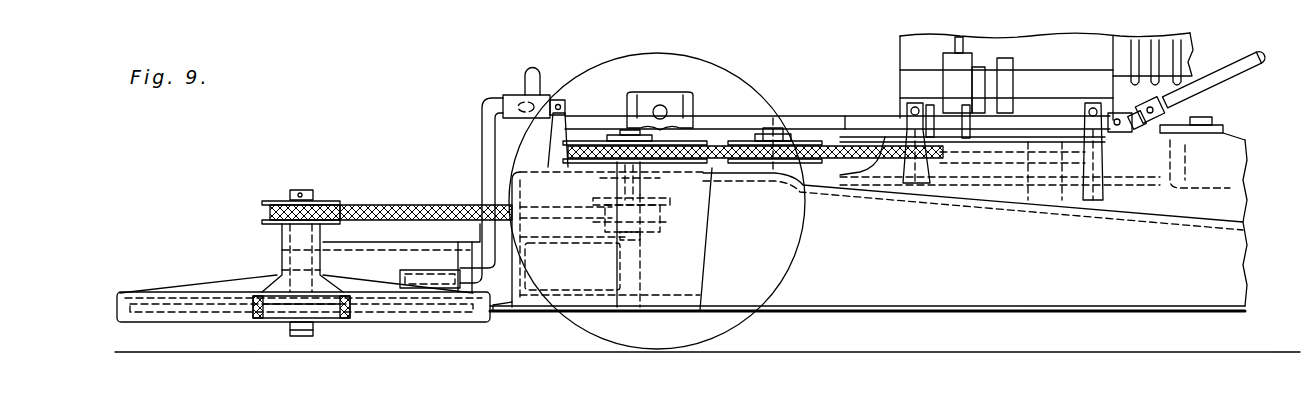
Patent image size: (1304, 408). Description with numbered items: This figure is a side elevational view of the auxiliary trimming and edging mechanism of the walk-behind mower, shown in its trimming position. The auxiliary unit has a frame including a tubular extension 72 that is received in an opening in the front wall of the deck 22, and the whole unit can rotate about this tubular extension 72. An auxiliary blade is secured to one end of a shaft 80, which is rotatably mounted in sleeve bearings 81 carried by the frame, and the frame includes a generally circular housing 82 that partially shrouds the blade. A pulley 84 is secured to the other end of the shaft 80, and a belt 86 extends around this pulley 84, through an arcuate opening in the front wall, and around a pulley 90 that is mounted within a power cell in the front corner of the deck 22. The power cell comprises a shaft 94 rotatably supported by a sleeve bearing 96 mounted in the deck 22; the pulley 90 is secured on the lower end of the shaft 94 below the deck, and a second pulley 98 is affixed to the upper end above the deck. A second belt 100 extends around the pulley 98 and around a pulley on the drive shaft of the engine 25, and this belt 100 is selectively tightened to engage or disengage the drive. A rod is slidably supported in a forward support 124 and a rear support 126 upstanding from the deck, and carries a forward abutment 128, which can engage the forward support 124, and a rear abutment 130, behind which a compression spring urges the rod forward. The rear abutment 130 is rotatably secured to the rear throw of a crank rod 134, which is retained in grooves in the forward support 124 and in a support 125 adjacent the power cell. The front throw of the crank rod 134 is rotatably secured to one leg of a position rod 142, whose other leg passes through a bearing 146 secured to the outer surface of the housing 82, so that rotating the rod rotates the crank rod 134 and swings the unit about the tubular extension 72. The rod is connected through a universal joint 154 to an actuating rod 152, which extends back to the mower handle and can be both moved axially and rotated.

The deck 22 is at (1035, 295).
The engine 25 is at (900, 44).
The tubular extension 72 is at (572, 312).
The shaft 80 is at (300, 190).
The sleeve bearings 81 is at (282, 240).
The circular housing 82 is at (185, 292).
The pulley 84 is at (330, 202).
The belt 86 is at (420, 210).
The pulley 90 is at (670, 205).
The shaft 94 is at (620, 140).
The sleeve bearing 96 is at (655, 178).
The second pulley 98 is at (692, 130).
The second belt 100 is at (845, 130).
The forward support 124 is at (915, 186).
The support 125 is at (556, 102).
The rear support 126 is at (1095, 195).
The forward abutment 128 is at (930, 105).
The rear abutment 130 is at (965, 110).
The crank rod 134 is at (800, 115).
The position rod 142 is at (483, 148).
The bearing 146 is at (432, 270).
The actuating rod 152 is at (1245, 73).
The universal joint 154 is at (1165, 130).